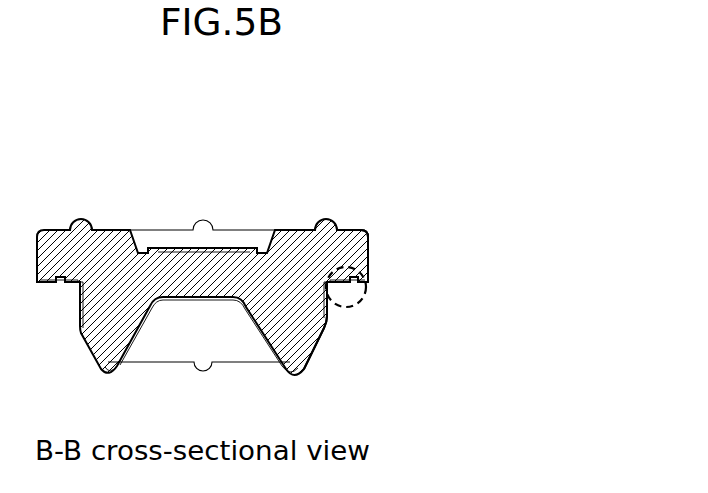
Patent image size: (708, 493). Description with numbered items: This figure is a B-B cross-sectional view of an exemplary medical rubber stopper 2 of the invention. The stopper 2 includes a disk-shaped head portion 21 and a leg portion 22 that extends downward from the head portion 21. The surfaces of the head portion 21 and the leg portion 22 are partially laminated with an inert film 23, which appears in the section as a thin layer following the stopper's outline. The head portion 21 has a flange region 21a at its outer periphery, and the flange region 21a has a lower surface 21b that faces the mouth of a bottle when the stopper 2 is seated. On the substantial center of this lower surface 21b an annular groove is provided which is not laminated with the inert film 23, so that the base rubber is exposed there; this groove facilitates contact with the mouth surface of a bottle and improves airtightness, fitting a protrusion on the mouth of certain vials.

The medical rubber stopper 2 is at (65, 184).
The head portion 21 is at (293, 247).
The flange region 21a is at (358, 252).
The lower surface of the flange region 21b is at (366, 291).
The leg portion 22 is at (303, 343).
The inert film 23 is at (323, 335).